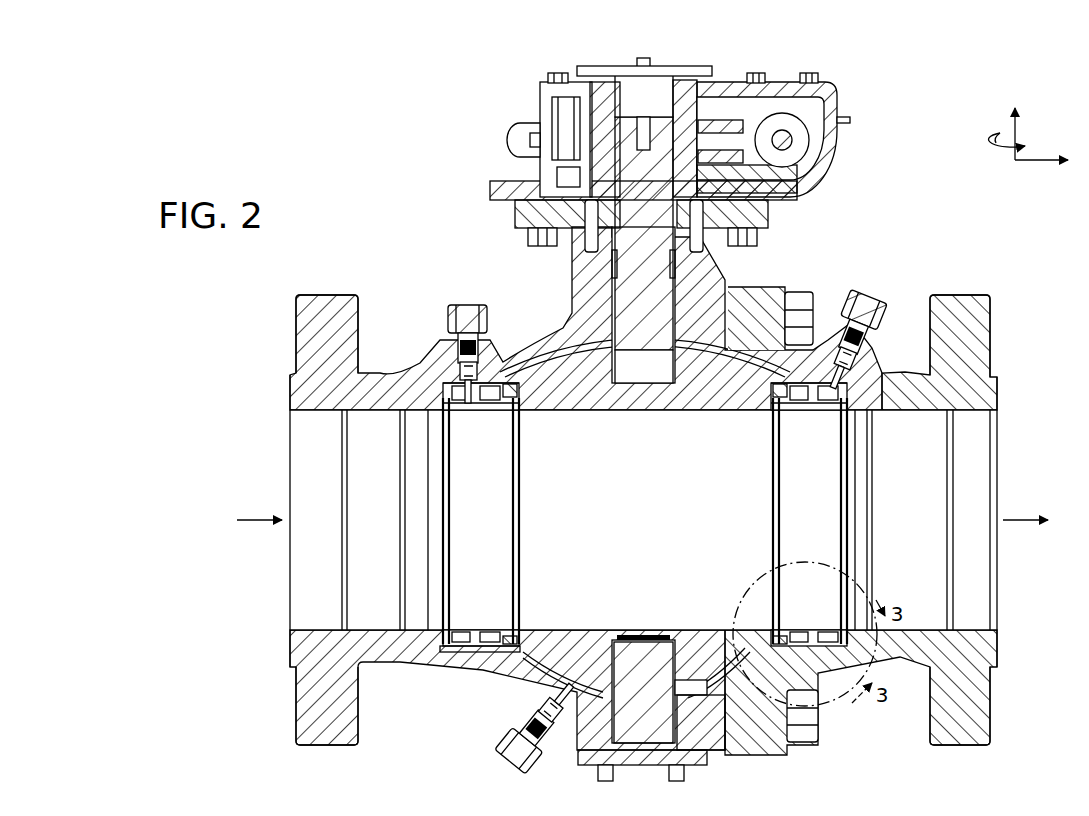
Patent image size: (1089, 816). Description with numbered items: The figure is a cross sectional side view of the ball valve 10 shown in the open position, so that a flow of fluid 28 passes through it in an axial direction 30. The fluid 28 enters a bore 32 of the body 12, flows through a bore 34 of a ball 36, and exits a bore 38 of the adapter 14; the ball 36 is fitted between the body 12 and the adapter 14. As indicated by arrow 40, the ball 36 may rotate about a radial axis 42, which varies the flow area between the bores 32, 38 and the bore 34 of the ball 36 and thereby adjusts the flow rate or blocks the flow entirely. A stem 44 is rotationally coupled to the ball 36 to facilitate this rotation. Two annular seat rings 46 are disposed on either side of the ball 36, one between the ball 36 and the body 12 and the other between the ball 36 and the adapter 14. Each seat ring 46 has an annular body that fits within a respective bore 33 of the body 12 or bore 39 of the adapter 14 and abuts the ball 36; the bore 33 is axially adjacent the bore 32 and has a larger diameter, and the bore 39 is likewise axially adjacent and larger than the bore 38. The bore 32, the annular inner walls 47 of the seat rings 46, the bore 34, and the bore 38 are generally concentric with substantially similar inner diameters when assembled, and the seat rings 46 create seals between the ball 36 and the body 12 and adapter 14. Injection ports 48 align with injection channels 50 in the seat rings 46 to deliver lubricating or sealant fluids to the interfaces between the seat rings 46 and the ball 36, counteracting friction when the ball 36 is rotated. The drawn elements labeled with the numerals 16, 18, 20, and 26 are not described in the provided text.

The ball valve 10 is at (374, 163).
The body 12 is at (470, 667).
The adapter 14 is at (908, 665).
The trunnion bearing cap 16 is at (790, 302).
The inlet flange 18 is at (322, 305).
The outlet flange 20 is at (980, 332).
The actuator 26 is at (782, 68).
The fluid 28 is at (257, 518).
The axial direction 30 is at (1037, 162).
The bore of the body 32 is at (302, 415).
The bore of the body 33 is at (485, 660).
The bore of the ball 34 is at (571, 416).
The ball 36 is at (560, 652).
The bore of the adapter 38 is at (990, 408).
The bore of the adapter 39 is at (773, 677).
The arrow 40 is at (996, 147).
The radial axis 42 is at (1012, 160).
The stem 44 is at (655, 300).
The seat ring 46 is at (445, 395).
The annular inner wall 47 is at (456, 411).
The injection port 48 is at (466, 305).
The injection channel 50 is at (481, 409).